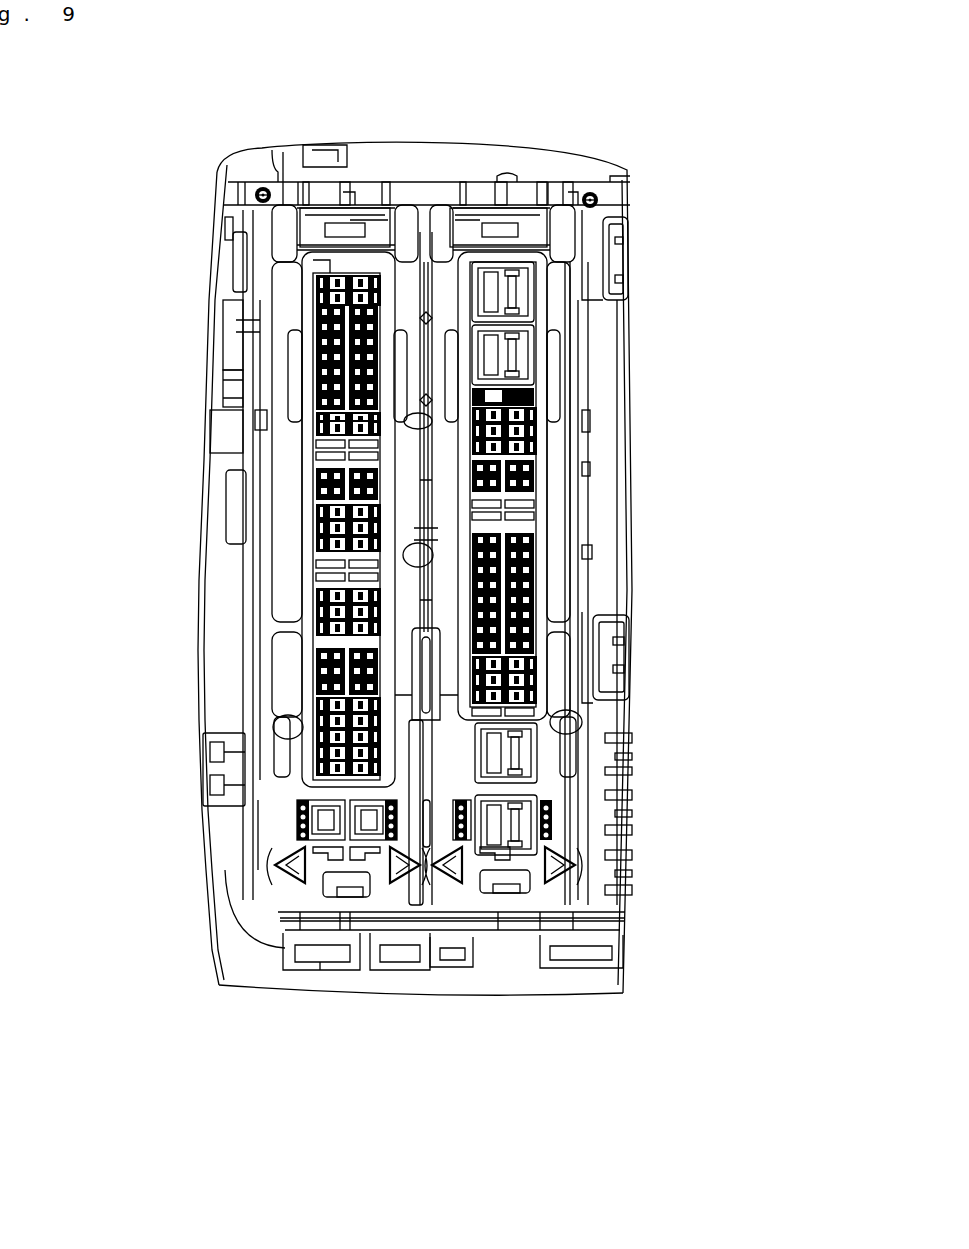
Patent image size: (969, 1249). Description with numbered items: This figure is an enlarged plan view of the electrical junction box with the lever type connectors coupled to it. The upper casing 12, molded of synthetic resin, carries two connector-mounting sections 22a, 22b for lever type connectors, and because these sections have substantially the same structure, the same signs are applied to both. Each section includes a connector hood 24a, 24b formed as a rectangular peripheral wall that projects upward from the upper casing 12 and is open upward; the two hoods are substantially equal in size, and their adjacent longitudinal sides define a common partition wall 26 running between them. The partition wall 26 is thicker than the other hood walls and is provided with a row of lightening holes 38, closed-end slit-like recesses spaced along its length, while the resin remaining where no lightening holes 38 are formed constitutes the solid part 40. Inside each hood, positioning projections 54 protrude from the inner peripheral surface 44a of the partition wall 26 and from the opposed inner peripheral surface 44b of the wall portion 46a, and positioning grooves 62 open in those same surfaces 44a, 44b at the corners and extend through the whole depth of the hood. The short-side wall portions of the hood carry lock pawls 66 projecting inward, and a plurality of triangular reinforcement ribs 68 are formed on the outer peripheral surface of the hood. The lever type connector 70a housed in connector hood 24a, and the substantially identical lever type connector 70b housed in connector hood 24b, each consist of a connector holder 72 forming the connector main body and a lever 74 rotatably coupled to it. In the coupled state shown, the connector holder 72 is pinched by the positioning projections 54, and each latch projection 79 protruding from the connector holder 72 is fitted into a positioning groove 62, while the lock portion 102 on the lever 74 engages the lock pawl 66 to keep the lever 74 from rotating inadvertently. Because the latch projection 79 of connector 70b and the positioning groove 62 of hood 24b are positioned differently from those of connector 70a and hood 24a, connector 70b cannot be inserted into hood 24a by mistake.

The upper casing 12 is at (642, 126).
The connector-mounting section for the lever type connector 22a is at (551, 184).
The connector-mounting section for the lever type connector 22b is at (289, 181).
The connector hood 24a is at (597, 200).
The connector hood 24b is at (253, 198).
The partition wall 26 is at (442, 404).
The lightening holes 38 is at (420, 275).
The solid part 40 is at (430, 535).
The inner peripheral surface 44a is at (413, 695).
The inner peripheral surface 44b is at (273, 727).
The wall portion 46a is at (272, 673).
The positioning projection 54 is at (290, 825).
The positioning groove 62 is at (290, 877).
The lock pawl 66 is at (335, 225).
The reinforcement ribs 68 is at (344, 192).
The lever type connector 70a is at (592, 463).
The lever type connector 70b is at (258, 336).
The connector holder 72 is at (292, 618).
The lever 74 is at (285, 468).
The latch projection 79 is at (560, 852).
The lock portion 102 is at (377, 230).